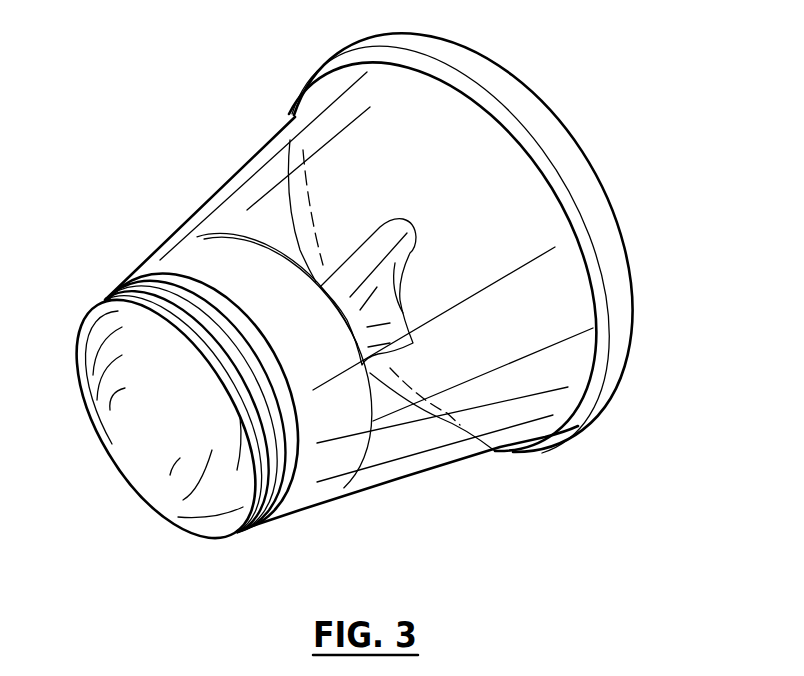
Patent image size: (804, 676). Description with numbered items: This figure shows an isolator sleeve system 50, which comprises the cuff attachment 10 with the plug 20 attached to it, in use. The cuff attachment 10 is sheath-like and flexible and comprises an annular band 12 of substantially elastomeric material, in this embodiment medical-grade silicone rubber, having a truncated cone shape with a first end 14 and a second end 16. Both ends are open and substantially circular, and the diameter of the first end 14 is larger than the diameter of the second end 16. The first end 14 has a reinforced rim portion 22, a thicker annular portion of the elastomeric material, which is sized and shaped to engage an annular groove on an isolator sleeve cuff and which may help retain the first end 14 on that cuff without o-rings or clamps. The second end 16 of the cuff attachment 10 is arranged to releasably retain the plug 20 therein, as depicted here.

The cuff attachment 10 is at (647, 325).
The annular band 12 is at (415, 448).
The first end 14 is at (480, 48).
The second end 16 is at (298, 511).
The plug 20 is at (178, 540).
The reinforced rim portion 22 is at (584, 188).
The isolator sleeve system 50 is at (115, 177).